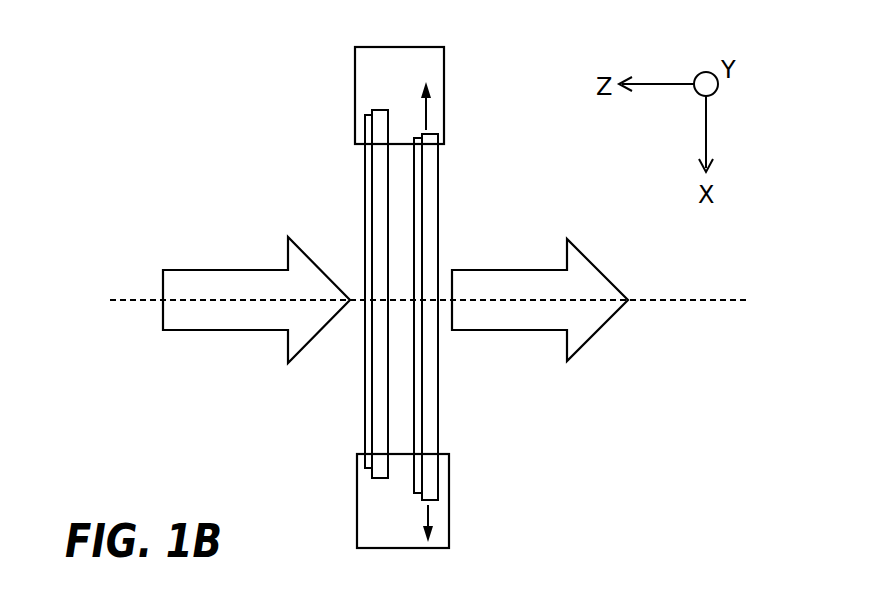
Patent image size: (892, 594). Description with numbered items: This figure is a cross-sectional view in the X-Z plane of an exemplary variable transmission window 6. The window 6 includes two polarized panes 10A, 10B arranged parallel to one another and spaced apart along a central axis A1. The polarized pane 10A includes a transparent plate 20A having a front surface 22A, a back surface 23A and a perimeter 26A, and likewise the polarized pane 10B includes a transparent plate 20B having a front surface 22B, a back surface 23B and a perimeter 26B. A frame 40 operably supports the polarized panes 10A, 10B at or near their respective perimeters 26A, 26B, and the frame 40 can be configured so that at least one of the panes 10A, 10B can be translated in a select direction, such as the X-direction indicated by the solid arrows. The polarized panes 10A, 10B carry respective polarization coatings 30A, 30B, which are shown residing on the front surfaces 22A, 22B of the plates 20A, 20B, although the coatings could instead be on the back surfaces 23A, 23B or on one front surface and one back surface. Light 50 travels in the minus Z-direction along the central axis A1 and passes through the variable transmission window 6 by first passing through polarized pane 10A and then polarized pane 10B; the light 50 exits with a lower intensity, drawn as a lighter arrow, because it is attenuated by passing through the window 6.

The variable transmission window 6 is at (216, 98).
The frame 40 is at (445, 57).
The polarized pane 10A is at (327, 262).
The polarized pane 10B is at (455, 300).
The transparent plate 20A is at (321, 262).
The transparent plate 20B is at (532, 300).
The front surface 22A is at (372, 418).
The front surface 22B is at (422, 404).
The back surface 23A is at (388, 376).
The back surface 23B is at (439, 378).
The perimeter 26A is at (380, 131).
The perimeter 26B is at (432, 134).
The polarization coating 30A is at (365, 380).
The polarization coating 30B is at (414, 161).
The light 50 is at (205, 270).
The central axis A1 is at (683, 300).